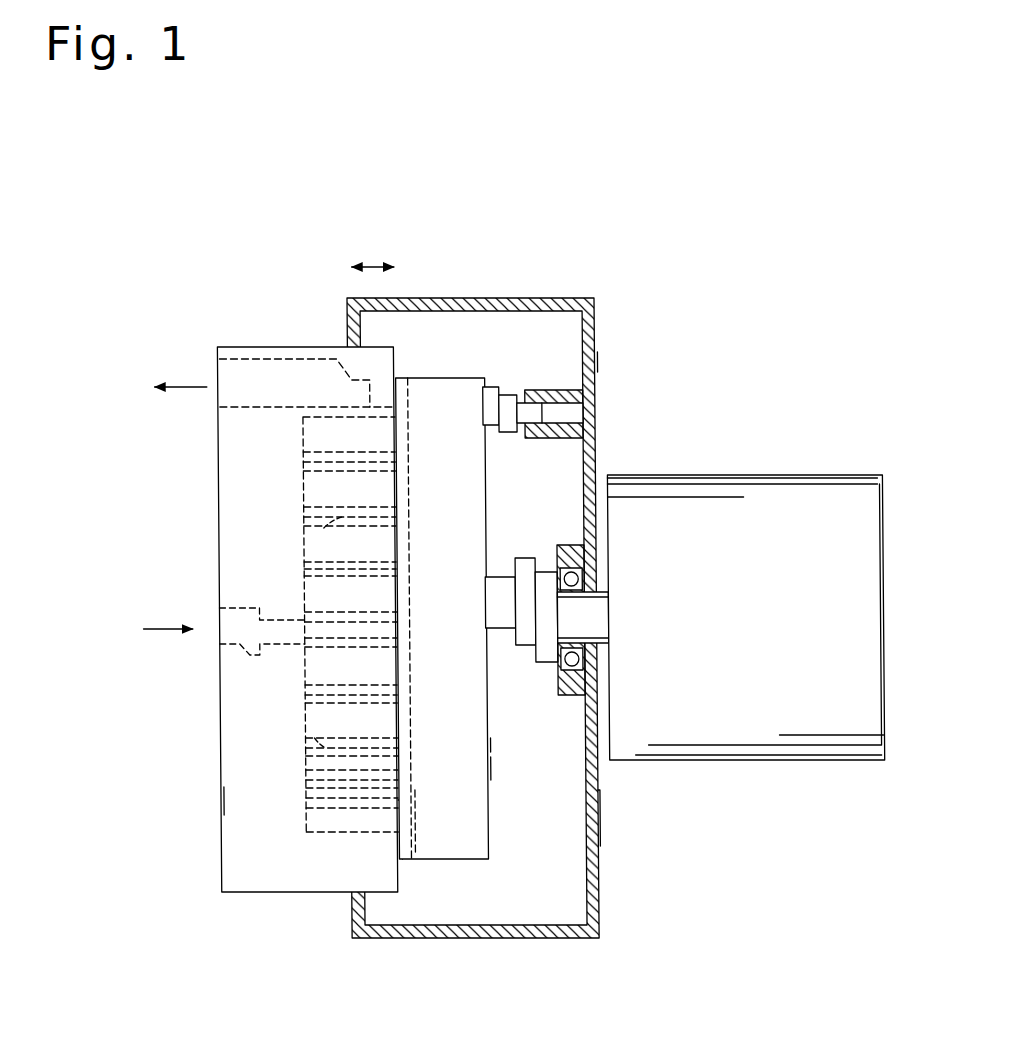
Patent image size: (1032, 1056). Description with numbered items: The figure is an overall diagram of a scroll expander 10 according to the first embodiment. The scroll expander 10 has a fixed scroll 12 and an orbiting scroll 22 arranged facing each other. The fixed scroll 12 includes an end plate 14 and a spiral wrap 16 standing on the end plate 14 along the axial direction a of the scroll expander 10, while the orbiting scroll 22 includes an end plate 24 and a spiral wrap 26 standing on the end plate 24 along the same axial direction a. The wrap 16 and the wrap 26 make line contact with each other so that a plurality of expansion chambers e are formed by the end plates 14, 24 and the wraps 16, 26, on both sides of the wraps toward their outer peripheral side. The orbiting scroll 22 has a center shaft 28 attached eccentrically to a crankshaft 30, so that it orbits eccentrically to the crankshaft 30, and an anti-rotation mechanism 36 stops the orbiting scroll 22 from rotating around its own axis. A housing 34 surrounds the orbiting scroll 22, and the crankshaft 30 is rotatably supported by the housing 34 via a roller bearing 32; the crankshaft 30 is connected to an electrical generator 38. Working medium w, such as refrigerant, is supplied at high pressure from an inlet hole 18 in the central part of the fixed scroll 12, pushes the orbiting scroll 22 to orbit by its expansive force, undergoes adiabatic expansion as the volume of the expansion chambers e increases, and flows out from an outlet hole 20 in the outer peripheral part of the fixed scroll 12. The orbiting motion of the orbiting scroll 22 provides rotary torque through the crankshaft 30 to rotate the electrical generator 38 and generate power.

The scroll expander 10 is at (477, 575).
The fixed scroll 12 is at (206, 508).
The end plate 14 is at (317, 835).
The spiral wrap 16 is at (311, 790).
The inlet hole 18 is at (217, 646).
The outlet hole 20 is at (249, 407).
The orbiting scroll 22 is at (527, 684).
The end plate 24 is at (407, 775).
The spiral wrap 26 is at (322, 528).
The center shaft 28 is at (497, 632).
The crankshaft 30 is at (588, 615).
The roller bearing 32 is at (591, 670).
The housing 34 is at (580, 940).
The anti-rotation mechanism 36 is at (526, 372).
The electrical generator 38 is at (749, 475).
The axial direction a is at (373, 265).
The working medium w is at (155, 628).
The expansion chambers e is at (311, 738).